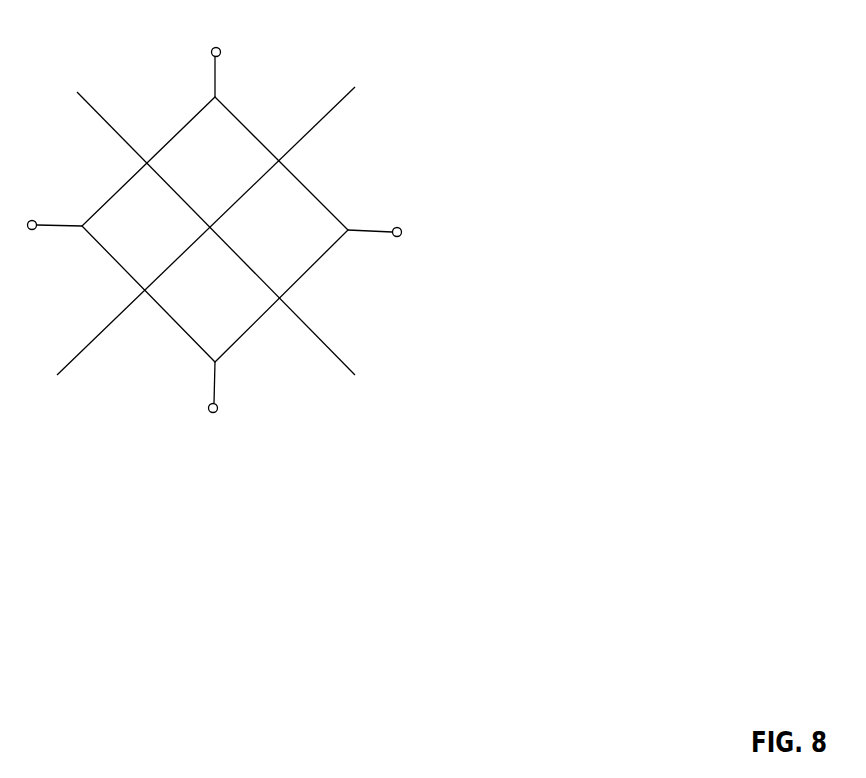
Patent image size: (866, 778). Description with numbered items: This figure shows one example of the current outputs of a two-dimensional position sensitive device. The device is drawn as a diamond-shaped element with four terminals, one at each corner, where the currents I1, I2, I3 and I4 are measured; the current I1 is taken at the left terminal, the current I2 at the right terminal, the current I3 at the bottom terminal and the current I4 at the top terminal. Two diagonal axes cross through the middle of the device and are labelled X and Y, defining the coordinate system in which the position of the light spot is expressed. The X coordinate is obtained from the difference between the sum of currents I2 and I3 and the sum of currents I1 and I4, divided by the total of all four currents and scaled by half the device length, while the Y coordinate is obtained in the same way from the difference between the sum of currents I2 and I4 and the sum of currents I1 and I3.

The current I1 is at (44, 231).
The current I2 is at (388, 239).
The current I3 is at (219, 408).
The current I4 is at (222, 59).
The X coordinate X is at (225, 235).
The Y coordinate Y is at (206, 224).